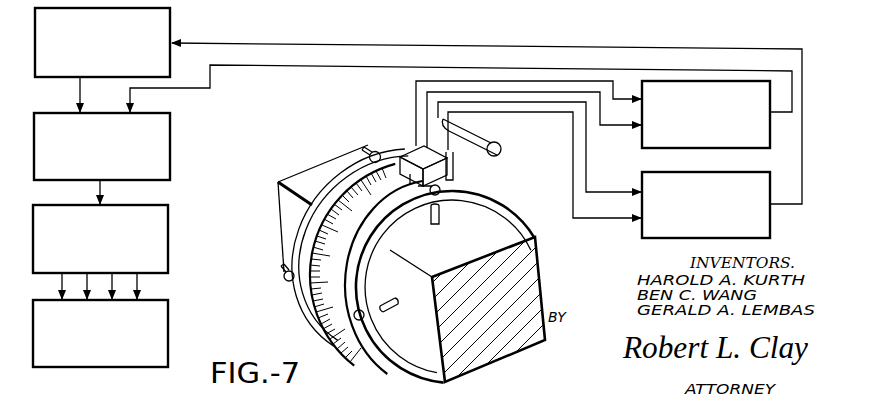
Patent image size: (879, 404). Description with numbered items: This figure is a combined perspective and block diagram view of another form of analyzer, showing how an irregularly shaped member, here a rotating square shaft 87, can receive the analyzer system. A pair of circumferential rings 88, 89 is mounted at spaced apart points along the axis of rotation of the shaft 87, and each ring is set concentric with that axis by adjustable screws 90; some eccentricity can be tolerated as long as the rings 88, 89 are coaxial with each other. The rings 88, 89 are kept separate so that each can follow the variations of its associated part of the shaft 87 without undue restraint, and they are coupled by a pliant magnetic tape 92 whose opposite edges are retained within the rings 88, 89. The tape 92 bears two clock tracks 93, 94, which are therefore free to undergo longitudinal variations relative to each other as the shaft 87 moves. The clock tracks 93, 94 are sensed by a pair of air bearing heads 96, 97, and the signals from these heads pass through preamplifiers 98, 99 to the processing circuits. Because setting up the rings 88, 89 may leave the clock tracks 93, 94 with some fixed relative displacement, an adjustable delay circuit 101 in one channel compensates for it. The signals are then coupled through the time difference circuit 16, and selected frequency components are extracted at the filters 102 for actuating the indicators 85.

The adjustable delay circuit 101 is at (171, 13).
The time difference circuit 16 is at (171, 118).
The filters 102 is at (169, 212).
The indicators 85 is at (169, 307).
The preamplifier 99 is at (642, 141).
The preamplifier 98 is at (642, 231).
The rotating square shaft 87 is at (320, 160).
The circumferential ring 89 is at (310, 302).
The clock track 94 is at (340, 174).
The pliant magnetic tape 92 is at (340, 240).
The clock track 93 is at (378, 228).
The circumferential ring 88 is at (368, 343).
The adjustable screws 90 is at (369, 152).
The air bearing head 97 is at (400, 154).
The air bearing head 96 is at (453, 175).